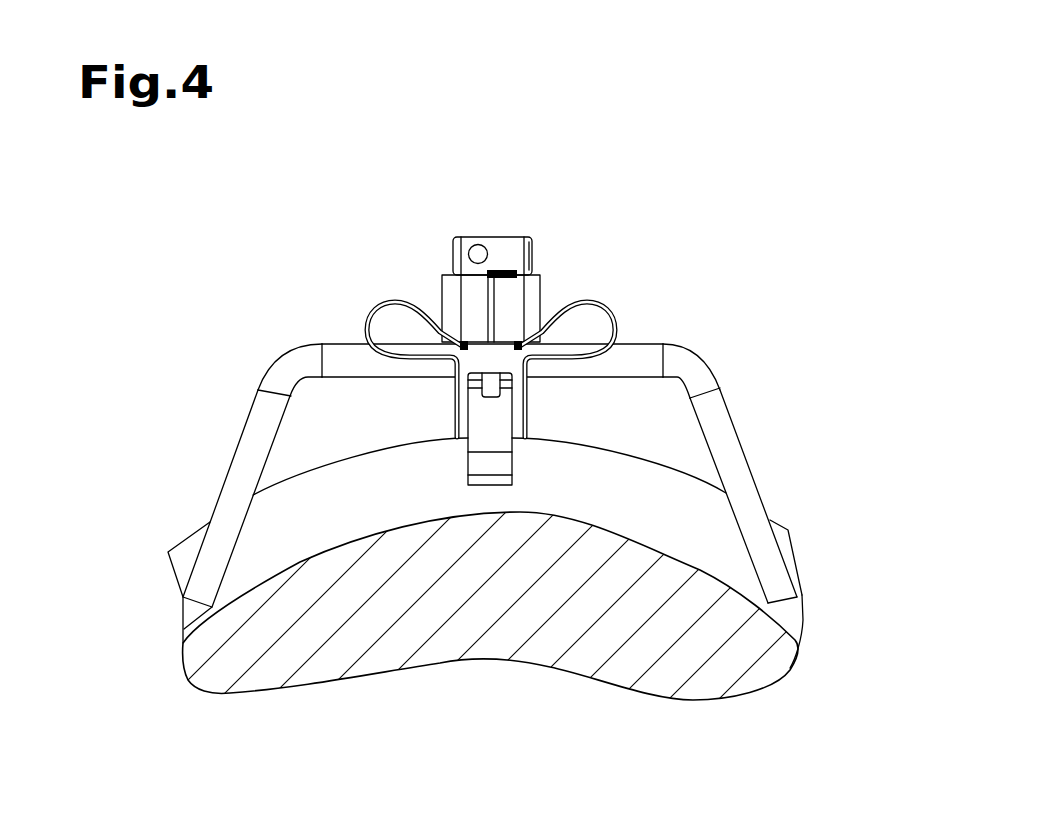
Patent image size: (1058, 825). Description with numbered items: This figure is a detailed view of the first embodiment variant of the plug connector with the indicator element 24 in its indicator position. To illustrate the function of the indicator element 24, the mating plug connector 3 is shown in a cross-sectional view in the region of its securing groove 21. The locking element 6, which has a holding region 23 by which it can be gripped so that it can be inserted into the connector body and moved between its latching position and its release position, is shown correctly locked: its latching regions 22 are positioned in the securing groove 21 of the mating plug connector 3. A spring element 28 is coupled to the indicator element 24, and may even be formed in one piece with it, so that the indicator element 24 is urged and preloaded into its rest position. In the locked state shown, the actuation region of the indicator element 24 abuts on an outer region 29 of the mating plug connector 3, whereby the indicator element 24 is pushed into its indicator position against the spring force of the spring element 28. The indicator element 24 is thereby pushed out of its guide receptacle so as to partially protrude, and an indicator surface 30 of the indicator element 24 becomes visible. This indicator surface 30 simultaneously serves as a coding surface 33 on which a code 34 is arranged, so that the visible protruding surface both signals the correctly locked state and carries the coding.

The mating plug connector 3 is at (552, 638).
The locking element 6 is at (492, 474).
The securing groove 21 is at (722, 532).
The latching regions 22 is at (193, 615).
The holding region 23 is at (640, 360).
The indicator element 24 is at (578, 265).
The spring element 28 is at (592, 306).
The outer region 29 is at (636, 455).
The indicator surface 30 is at (472, 234).
The coding surface 33 is at (531, 253).
The code 34 is at (532, 273).